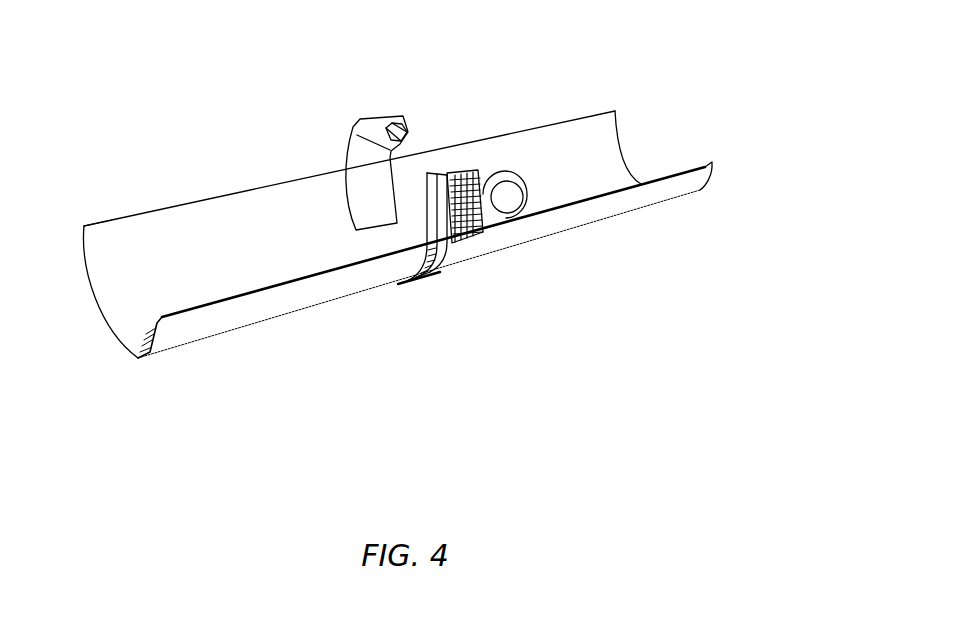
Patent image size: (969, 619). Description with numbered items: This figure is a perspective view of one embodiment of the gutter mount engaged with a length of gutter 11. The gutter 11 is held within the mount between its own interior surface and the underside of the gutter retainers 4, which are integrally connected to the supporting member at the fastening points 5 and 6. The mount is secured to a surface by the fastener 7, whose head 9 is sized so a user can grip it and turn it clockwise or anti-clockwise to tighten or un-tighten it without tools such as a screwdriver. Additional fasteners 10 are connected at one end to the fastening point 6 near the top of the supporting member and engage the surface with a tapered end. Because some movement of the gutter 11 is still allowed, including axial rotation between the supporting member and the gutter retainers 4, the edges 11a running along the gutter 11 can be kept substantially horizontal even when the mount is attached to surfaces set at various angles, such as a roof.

The gutter retainer 4 is at (368, 175).
The fastening point 5 is at (462, 178).
The fastening point 6 is at (377, 120).
The fastener 7 is at (481, 179).
The head 9 is at (512, 198).
The additional fastener 10 is at (438, 117).
The gutter 11 is at (220, 250).
The edge of the gutter 11a is at (112, 219).